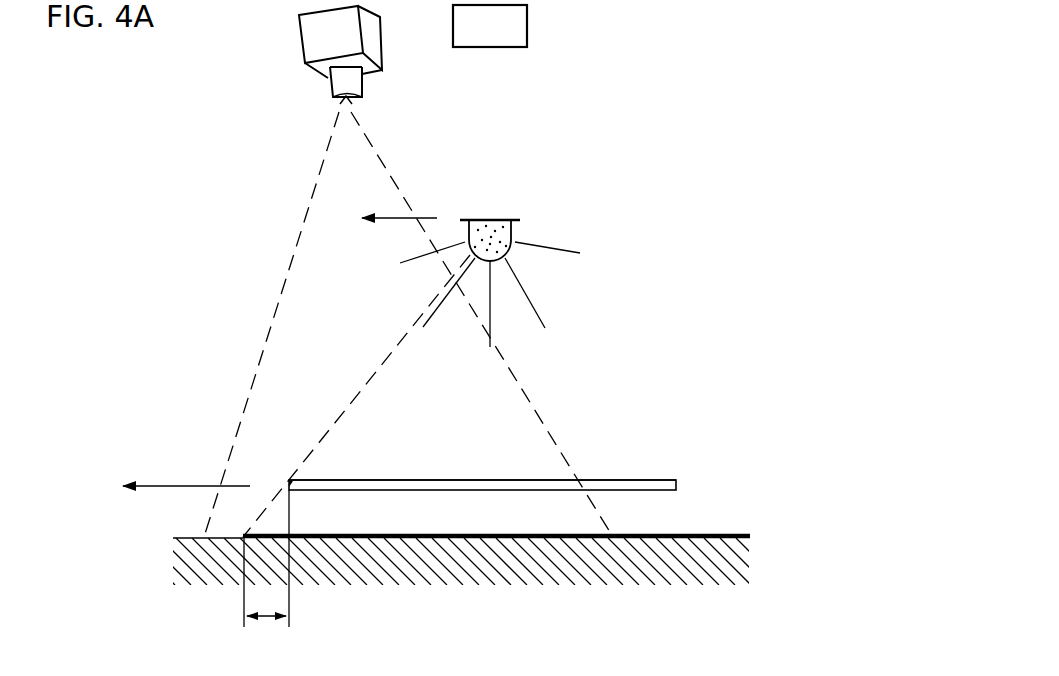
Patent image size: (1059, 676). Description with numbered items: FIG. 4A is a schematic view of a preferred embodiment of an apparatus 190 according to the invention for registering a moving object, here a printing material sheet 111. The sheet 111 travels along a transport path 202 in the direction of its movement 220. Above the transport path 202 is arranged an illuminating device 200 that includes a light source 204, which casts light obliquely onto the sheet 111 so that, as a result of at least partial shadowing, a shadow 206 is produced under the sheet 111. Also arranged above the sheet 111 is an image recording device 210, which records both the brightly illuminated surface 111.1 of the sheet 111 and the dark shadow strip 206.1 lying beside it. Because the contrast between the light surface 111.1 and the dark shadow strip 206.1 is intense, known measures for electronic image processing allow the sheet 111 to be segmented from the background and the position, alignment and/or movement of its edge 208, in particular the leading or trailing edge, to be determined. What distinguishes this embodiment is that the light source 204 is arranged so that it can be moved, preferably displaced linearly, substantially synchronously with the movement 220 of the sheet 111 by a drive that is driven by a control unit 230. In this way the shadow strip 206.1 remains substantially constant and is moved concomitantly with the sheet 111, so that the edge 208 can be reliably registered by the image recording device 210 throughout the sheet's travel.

The printing material sheet 111 is at (492, 482).
The surface of the sheet 111.1 is at (400, 480).
The apparatus 190 is at (278, 203).
The illuminating device 200 is at (429, 313).
The transport path 202 is at (657, 387).
The light source 204 is at (487, 230).
The shadow 206 is at (675, 535).
The shadow strip 206.1 is at (267, 618).
The edge 208 is at (288, 483).
The image recording device 210 is at (320, 40).
The movement of the sheet 220 is at (170, 486).
The control unit 230 is at (517, 25).